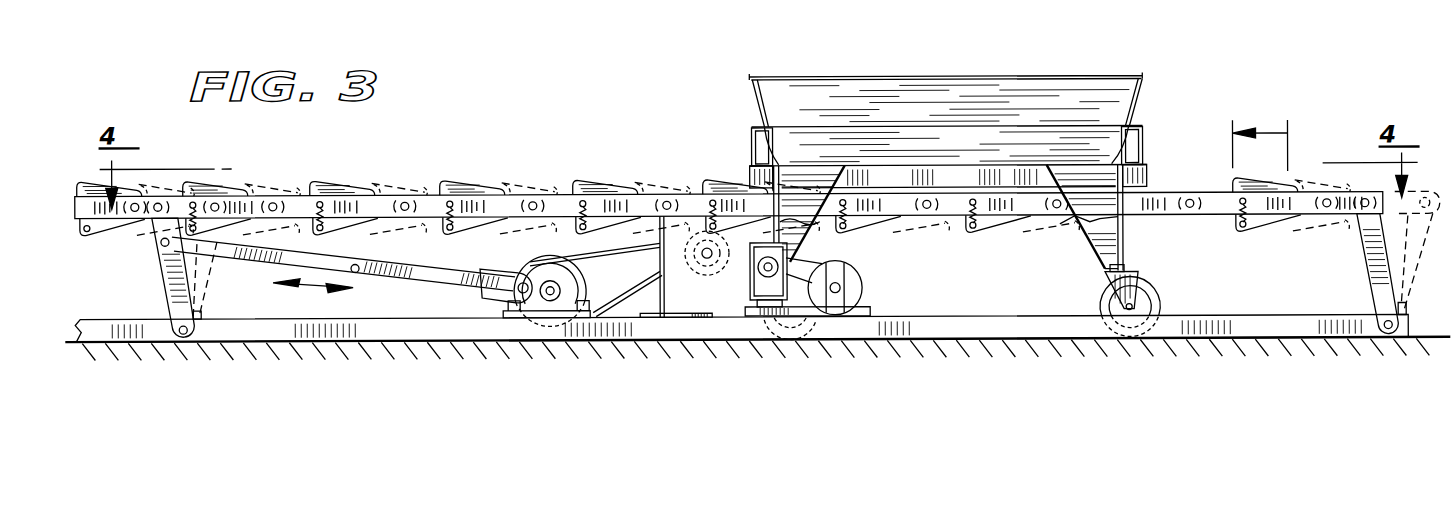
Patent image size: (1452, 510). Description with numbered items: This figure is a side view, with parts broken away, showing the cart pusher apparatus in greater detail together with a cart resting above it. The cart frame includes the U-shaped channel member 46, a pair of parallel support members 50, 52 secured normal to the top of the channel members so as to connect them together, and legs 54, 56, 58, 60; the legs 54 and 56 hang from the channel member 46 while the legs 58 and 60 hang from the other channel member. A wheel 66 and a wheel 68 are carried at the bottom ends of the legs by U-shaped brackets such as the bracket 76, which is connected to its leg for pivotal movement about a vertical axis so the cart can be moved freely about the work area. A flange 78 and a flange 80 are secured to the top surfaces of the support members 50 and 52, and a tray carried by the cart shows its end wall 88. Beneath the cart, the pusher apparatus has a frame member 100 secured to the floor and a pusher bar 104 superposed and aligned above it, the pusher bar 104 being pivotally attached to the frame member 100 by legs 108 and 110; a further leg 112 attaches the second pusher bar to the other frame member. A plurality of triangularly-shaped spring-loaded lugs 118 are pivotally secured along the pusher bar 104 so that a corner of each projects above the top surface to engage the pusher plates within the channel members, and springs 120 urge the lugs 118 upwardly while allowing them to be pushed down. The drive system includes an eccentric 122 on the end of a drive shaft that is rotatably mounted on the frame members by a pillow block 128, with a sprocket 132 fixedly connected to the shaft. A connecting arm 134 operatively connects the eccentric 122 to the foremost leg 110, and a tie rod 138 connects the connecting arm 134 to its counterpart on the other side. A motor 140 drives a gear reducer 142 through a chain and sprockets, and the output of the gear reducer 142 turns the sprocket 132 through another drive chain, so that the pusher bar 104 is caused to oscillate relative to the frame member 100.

The U-shaped channel member 46 is at (1140, 175).
The support member 50 is at (1143, 138).
The support member 52 is at (752, 148).
The leg 54 is at (1097, 178).
The leg 56 is at (810, 187).
The leg 58 is at (818, 233).
The leg 60 is at (1102, 250).
The wheel 66 is at (748, 307).
The wheel 68 is at (1158, 300).
The U-shaped bracket 76 is at (1130, 282).
The flange 78 is at (1142, 97).
The flange 80 is at (752, 100).
The end wall 88 is at (926, 92).
The frame member 100 is at (285, 325).
The pusher bar 104 is at (513, 202).
The leg 108 is at (1377, 272).
The leg 110 is at (173, 287).
The leg 112 is at (160, 263).
The spring-loaded lug 118 is at (588, 180).
The spring 120 is at (450, 200).
The eccentric 122 is at (580, 280).
The pillow block 128 is at (578, 287).
The sprocket 132 is at (545, 257).
The connecting arm 134 is at (443, 282).
The tie rod 138 is at (345, 262).
The motor 140 is at (862, 297).
The gear reducer 142 is at (682, 222).